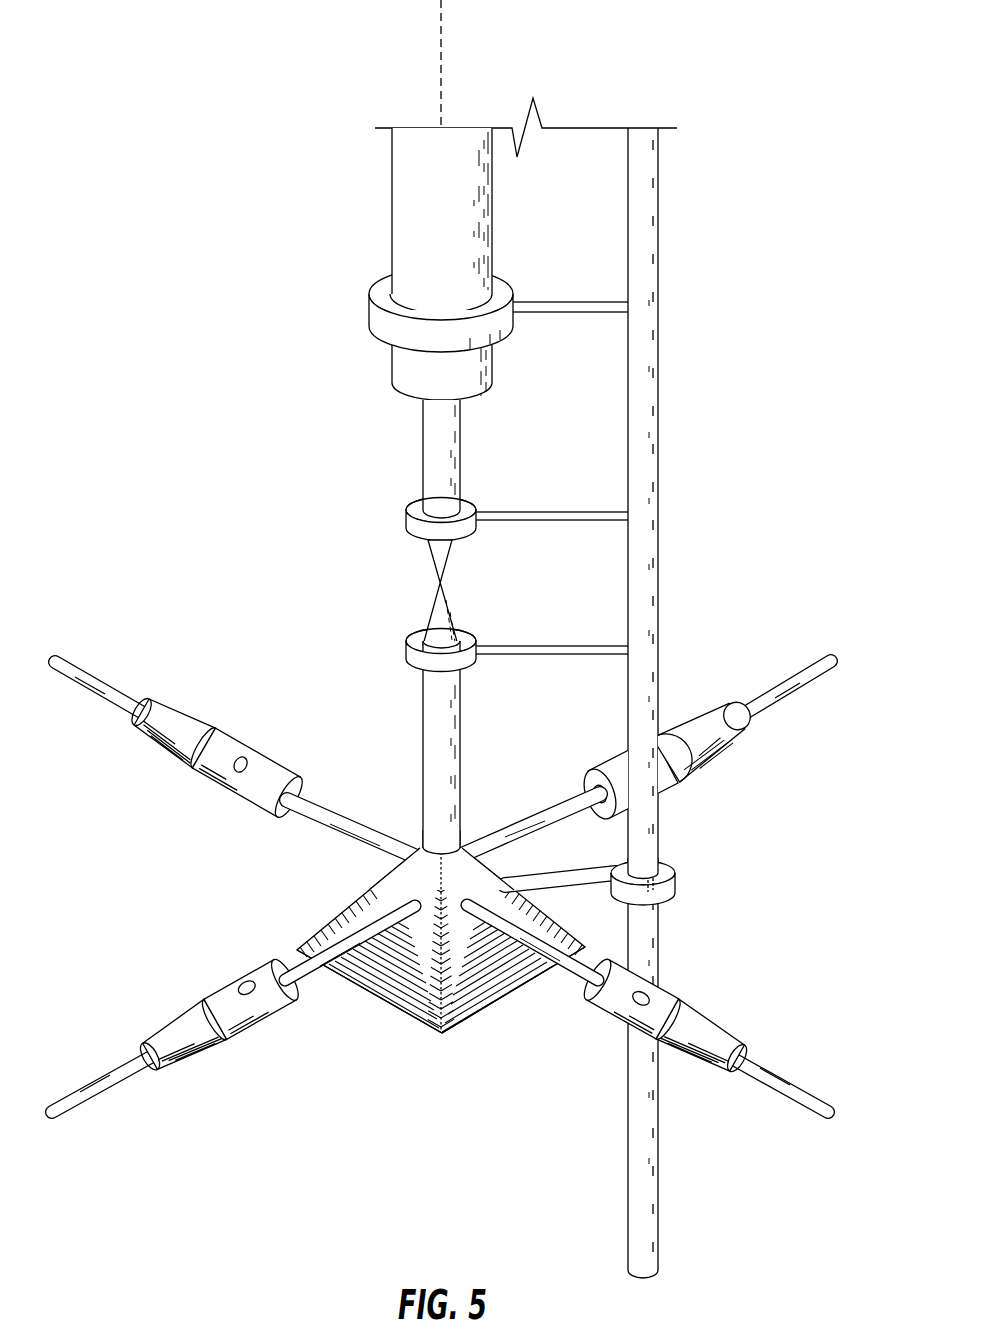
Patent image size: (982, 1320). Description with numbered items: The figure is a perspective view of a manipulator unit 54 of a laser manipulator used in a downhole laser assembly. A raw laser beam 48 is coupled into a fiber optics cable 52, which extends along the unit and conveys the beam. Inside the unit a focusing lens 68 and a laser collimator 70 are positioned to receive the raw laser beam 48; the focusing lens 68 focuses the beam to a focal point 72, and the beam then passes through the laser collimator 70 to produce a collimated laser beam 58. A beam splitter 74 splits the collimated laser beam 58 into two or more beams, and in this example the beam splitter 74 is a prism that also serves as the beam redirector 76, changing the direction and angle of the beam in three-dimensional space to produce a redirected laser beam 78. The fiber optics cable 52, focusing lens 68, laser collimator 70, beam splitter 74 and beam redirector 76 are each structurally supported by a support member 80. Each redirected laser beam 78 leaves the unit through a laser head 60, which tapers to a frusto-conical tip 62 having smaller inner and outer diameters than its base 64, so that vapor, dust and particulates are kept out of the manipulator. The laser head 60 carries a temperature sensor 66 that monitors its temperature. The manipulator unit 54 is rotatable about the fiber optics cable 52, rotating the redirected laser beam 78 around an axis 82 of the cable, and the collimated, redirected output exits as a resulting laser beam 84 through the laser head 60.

The raw laser beam 48 is at (461, 447).
The fiber optics cable 52 is at (392, 188).
The manipulator unit 54 is at (436, 639).
The collimated laser beam 58 is at (461, 742).
The laser head 60 is at (729, 750).
The tip 62 is at (166, 1020).
The base 64 is at (266, 1000).
The temperature sensor 66 is at (244, 760).
The focusing lens 68 is at (418, 512).
The laser collimator 70 is at (418, 641).
The focal point 72 is at (447, 579).
The beam splitter 74 is at (425, 1022).
The beam redirector 76 is at (441, 991).
The redirected laser beam 78 is at (328, 832).
The support member 80 is at (660, 192).
The axis 82 is at (441, 35).
The resulting laser beam 84 is at (88, 694).